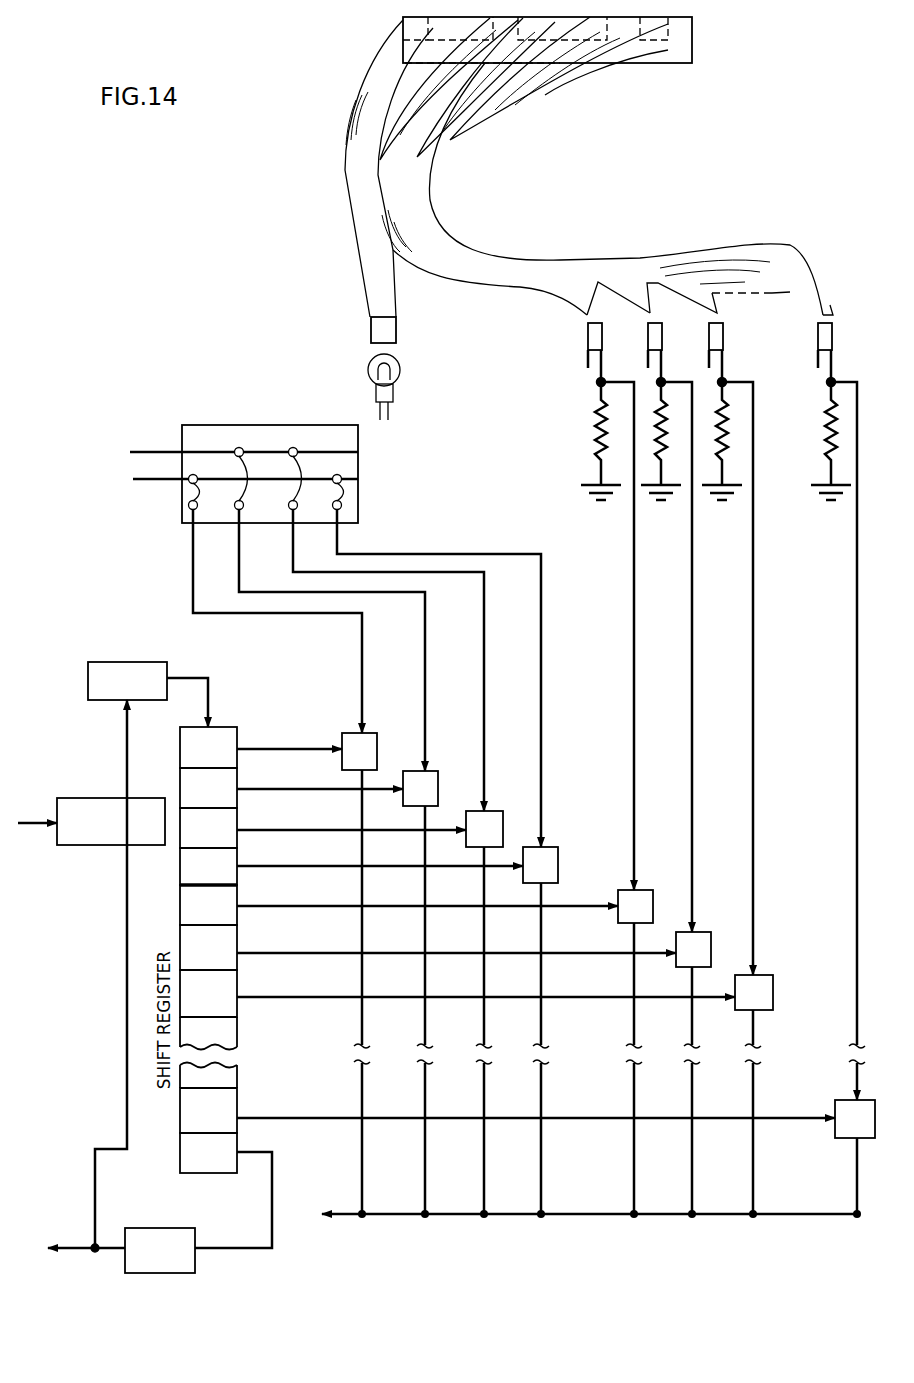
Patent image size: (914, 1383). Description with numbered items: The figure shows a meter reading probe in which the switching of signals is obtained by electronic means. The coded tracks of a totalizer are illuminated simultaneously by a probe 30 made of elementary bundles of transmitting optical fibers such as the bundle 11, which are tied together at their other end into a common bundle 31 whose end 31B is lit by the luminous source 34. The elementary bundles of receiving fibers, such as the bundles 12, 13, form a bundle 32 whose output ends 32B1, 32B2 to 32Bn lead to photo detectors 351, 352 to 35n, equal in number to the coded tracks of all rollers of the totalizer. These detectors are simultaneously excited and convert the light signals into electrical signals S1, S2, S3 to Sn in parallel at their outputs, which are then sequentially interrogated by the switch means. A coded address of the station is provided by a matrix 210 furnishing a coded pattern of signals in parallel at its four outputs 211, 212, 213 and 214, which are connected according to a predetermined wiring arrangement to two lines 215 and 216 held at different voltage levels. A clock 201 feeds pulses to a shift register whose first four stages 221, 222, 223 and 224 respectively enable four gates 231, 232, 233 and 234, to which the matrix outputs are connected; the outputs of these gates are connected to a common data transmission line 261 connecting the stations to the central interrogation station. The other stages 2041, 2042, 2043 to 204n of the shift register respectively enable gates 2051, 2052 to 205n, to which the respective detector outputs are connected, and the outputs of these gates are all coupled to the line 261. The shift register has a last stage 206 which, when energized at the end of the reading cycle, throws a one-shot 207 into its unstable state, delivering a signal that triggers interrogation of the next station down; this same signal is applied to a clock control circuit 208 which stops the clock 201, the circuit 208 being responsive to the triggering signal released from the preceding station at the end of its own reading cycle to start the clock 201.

The probe 30 is at (690, 40).
The elementary bundle of transmitting optical fibers 11 is at (500, 75).
The elementary bundle of receiving fibers 12 is at (486, 87).
The elementary bundle of receiving fibers 13 is at (559, 78).
The common bundle 31 is at (372, 281).
The end of common bundle 31B is at (380, 343).
The luminous source 34 is at (393, 392).
The bundle of receiving fibers 32 is at (520, 265).
The output end of elementary receiving bundle 32B1 is at (590, 316).
The output end of elementary receiving bundle 32B2 is at (657, 283).
The output end of elementary receiving bundle 32Bn is at (823, 315).
The photo detector 351 is at (588, 331).
The photo detector 352 is at (648, 329).
The photo detector 35n is at (818, 329).
The electrical signal S1 is at (596, 441).
The electrical signal S2 is at (658, 441).
The electrical signal S3 is at (719, 441).
The electrical signal Sn is at (827, 441).
The matrix 210 is at (302, 425).
The line 215 is at (148, 478).
The line 216 is at (207, 449).
The output of matrix 211 is at (189, 507).
The output of matrix 212 is at (235, 510).
The output of matrix 213 is at (289, 510).
The output of matrix 214 is at (341, 510).
The clock 201 is at (90, 672).
The clock control circuit 208 is at (110, 798).
The shift register stage 221 is at (261, 747).
The shift register stage 222 is at (291, 788).
The shift register stage 223 is at (323, 828).
The shift register stage 224 is at (351, 866).
The shift register stage 2041 is at (399, 905).
The shift register stage 2042 is at (428, 947).
The shift register stage 2043 is at (457, 993).
The shift register stage 204n is at (507, 1110).
The last stage of shift register 206 is at (226, 1190).
The one-shot 207 is at (196, 1268).
The gate 231 is at (348, 740).
The gate 232 is at (430, 780).
The gate 233 is at (494, 820).
The gate 234 is at (552, 854).
The gate 2051 is at (620, 896).
The gate 2052 is at (702, 942).
The gate 205n is at (842, 1106).
The common data transmission line 261 is at (410, 1217).